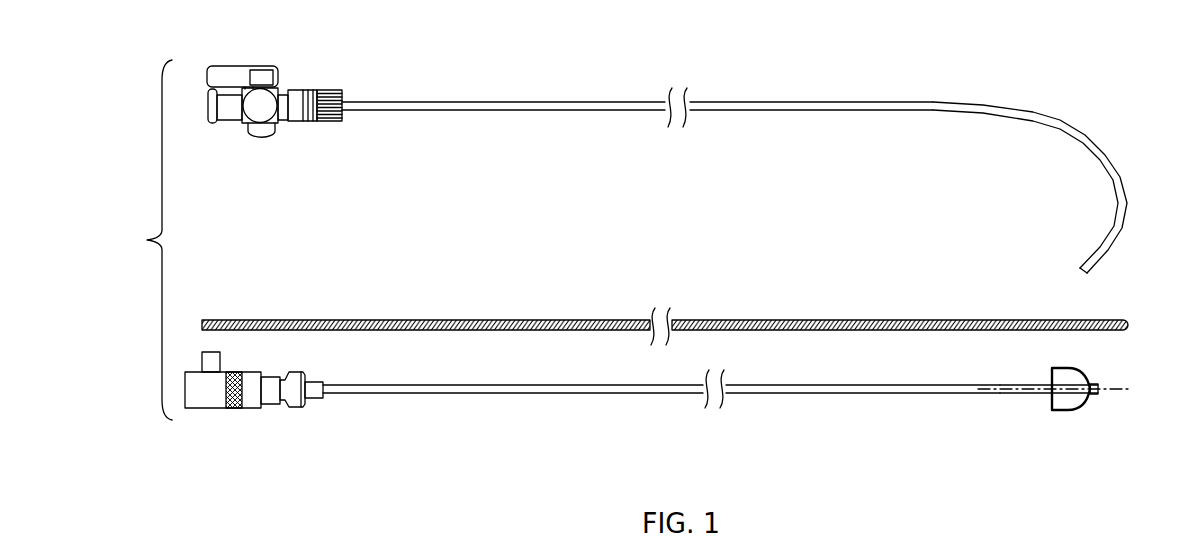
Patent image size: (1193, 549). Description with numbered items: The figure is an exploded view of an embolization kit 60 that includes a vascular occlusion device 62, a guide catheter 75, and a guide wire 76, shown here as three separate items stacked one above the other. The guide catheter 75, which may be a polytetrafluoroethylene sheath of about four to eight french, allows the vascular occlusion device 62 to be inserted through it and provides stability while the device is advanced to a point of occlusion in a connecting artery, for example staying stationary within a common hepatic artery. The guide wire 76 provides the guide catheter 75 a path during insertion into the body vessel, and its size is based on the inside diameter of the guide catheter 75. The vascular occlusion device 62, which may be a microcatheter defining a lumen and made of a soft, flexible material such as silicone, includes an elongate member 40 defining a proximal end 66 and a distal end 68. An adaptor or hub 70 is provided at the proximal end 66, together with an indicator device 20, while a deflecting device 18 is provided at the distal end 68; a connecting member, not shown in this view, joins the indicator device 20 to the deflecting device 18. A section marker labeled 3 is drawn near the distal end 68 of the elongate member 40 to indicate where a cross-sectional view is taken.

The embolization kit 60 is at (679, 157).
The guide catheter 75 is at (517, 113).
The guide wire 76 is at (467, 320).
The proximal end 66 is at (205, 427).
The indicator device 20 is at (222, 364).
The adaptor or hub 70 is at (272, 406).
The vascular occlusion device 62 is at (504, 398).
The elongate member 40 is at (800, 396).
The distal end 68 is at (1028, 398).
The deflecting device 18 is at (1089, 382).
The section line 3 is at (978, 389).